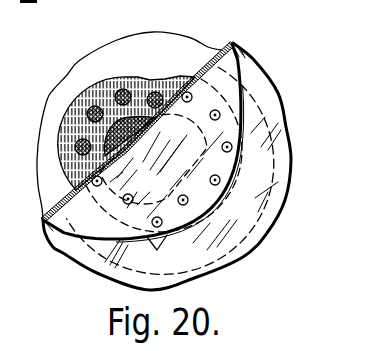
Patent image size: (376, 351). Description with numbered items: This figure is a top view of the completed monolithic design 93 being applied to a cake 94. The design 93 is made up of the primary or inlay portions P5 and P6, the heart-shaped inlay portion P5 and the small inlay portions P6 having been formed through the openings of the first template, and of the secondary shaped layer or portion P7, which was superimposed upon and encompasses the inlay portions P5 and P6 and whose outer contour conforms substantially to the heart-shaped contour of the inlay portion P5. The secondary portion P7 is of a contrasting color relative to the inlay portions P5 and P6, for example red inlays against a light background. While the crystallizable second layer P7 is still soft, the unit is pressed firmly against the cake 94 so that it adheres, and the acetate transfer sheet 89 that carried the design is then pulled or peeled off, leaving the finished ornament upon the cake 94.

The transfer sheet 89 is at (245, 78).
The completed monolithic design 93 is at (103, 83).
The cake 94 is at (47, 110).
The primary or inlay portion P5 is at (104, 133).
The primary or inlay portion P6 is at (75, 147).
The secondary shaped layer or portion P7 is at (93, 105).